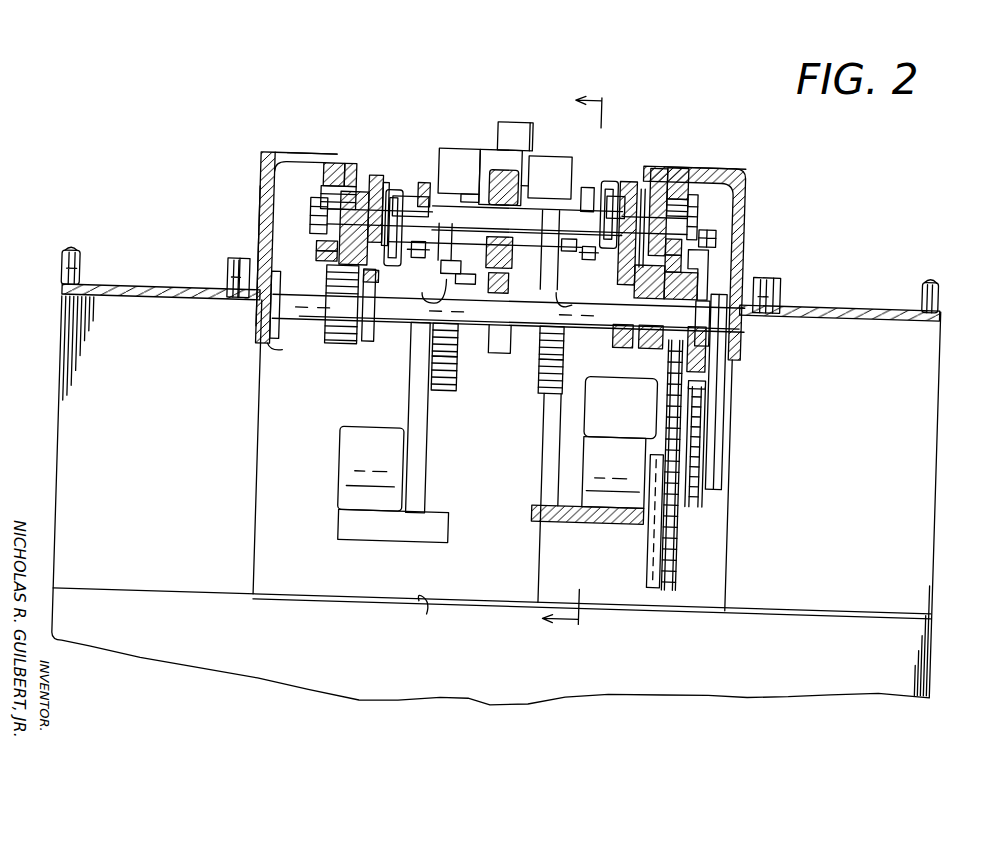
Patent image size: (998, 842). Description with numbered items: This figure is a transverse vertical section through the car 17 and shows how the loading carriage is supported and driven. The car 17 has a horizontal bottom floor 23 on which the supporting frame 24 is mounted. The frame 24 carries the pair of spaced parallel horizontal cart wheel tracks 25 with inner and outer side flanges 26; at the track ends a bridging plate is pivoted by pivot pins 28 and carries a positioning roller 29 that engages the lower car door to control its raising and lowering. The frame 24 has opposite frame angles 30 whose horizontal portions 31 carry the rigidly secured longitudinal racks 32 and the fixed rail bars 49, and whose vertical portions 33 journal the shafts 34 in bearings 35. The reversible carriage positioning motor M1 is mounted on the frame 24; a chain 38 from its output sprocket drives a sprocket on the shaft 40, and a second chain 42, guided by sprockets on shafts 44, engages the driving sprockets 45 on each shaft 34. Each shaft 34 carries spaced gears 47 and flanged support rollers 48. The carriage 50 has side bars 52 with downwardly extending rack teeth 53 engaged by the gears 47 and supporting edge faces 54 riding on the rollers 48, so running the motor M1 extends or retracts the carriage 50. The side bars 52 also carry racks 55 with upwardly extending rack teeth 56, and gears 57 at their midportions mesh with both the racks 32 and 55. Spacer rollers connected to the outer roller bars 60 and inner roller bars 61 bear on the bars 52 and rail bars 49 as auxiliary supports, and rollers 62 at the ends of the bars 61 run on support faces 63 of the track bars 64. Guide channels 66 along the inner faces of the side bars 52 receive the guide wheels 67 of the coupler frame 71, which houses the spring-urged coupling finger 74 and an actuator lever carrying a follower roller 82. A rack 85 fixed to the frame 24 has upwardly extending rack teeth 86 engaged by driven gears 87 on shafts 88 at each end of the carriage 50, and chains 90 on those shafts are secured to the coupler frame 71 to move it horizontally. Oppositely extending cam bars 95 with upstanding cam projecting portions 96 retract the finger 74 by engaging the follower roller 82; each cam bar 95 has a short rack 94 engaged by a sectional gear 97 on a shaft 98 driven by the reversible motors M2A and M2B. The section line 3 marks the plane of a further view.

The car 17 is at (258, 638).
The horizontal bottom floor 23 is at (434, 615).
The supporting frame 24 is at (262, 425).
The cart wheel tracks 25 is at (145, 294).
The inner and outer side flanges 26 is at (61, 268).
The pivot pins 28 is at (82, 270).
The positioning roller 29 is at (72, 250).
The frame angles 30 is at (254, 146).
The horizontal portions 31 is at (296, 145).
The longitudinal racks 32 is at (328, 155).
The vertical portions 33 is at (258, 199).
The shafts 34 is at (315, 300).
The bearings 35 is at (281, 323).
The chain 38 is at (687, 542).
The shaft 40 is at (727, 440).
The chain 42 is at (705, 488).
The shafts 44 is at (704, 396).
The driving sprockets 45 is at (707, 356).
The gears 47 is at (350, 335).
The flanged support rollers 48 is at (369, 332).
The fixed rail bars 49 is at (347, 155).
The carriage 50 is at (450, 121).
The side bars 52 is at (360, 215).
The rack teeth 53 is at (326, 266).
The supporting edge faces 54 is at (380, 265).
The racks 55 is at (315, 252).
The rack teeth 56 is at (315, 240).
The gears 57 is at (318, 186).
The outer roller bars 60 is at (308, 217).
The inner roller bars 61 is at (383, 173).
The rollers 62 is at (308, 201).
The support faces 63 is at (645, 160).
The track bars 64 is at (372, 166).
The guide channels 66 is at (394, 181).
The guide wheels 67 is at (412, 190).
The coupler frame 71 is at (487, 137).
The coupling finger 74 is at (515, 110).
The follower roller 82 is at (564, 206).
The rack 85 is at (537, 318).
The rack teeth 86 is at (503, 255).
The driven gears 87 is at (506, 202).
The shafts 88 is at (550, 177).
The chains 90 is at (421, 172).
The short rack 94 is at (498, 298).
The cam bars 95 is at (455, 251).
The cam projecting portions 96 is at (448, 250).
The interrupted or sectional gear 97 is at (460, 360).
The shaft 98 is at (459, 325).
The carriage positioning motor M1 is at (554, 420).
The reversible motor M2A is at (384, 418).
The reversible motor M2B is at (605, 452).
The section line 3 is at (565, 357).